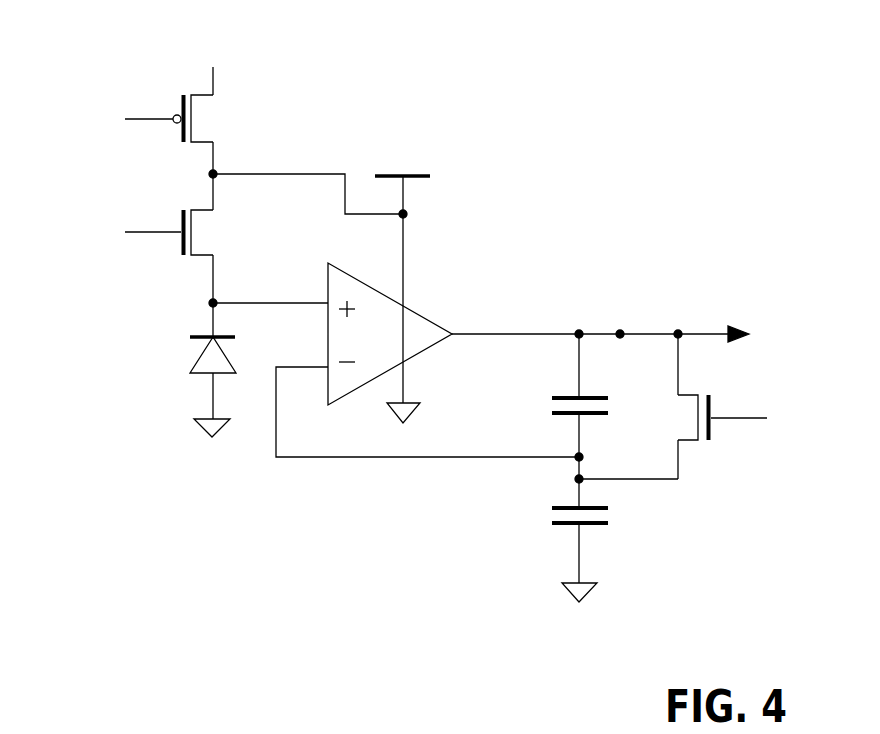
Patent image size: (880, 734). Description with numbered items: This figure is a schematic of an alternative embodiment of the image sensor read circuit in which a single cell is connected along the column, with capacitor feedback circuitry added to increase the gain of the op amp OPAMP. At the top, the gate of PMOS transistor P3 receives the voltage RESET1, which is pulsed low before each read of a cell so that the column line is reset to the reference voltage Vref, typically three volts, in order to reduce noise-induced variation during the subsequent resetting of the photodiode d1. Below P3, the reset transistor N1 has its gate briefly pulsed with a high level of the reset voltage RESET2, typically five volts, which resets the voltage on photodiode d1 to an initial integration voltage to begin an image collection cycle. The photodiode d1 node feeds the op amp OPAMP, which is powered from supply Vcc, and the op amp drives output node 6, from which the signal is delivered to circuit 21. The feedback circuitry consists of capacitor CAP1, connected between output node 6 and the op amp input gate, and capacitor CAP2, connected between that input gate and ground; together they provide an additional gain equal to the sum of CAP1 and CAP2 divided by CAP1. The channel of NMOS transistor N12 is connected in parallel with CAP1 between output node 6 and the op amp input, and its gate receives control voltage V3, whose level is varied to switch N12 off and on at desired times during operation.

The PMOS transistor P3 is at (205, 118).
The reset transistor N1 is at (208, 232).
The photodiode d1 is at (197, 387).
The NMOS transistor N12 is at (644, 406).
The output node 6 is at (620, 334).
The circuit 21 is at (814, 320).
The control voltage V3 is at (755, 420).
The capacitor CAP1 is at (537, 421).
The capacitor CAP2 is at (537, 553).
The reset voltage RESET1 is at (97, 120).
The reset voltage RESET2 is at (101, 235).
The reference voltage Vref is at (218, 62).
The supply voltage Vcc is at (402, 280).
The op amp OPAMP is at (407, 330).